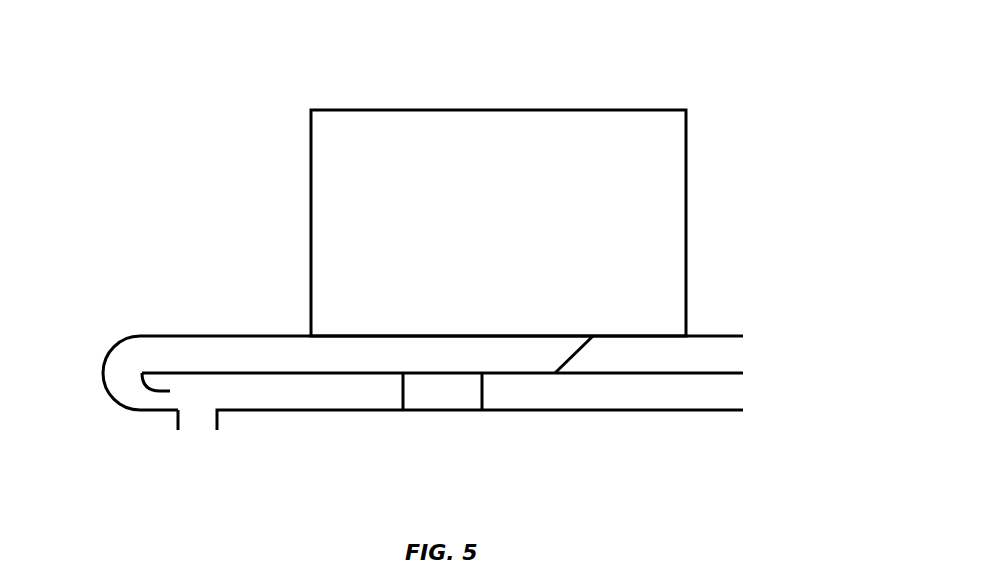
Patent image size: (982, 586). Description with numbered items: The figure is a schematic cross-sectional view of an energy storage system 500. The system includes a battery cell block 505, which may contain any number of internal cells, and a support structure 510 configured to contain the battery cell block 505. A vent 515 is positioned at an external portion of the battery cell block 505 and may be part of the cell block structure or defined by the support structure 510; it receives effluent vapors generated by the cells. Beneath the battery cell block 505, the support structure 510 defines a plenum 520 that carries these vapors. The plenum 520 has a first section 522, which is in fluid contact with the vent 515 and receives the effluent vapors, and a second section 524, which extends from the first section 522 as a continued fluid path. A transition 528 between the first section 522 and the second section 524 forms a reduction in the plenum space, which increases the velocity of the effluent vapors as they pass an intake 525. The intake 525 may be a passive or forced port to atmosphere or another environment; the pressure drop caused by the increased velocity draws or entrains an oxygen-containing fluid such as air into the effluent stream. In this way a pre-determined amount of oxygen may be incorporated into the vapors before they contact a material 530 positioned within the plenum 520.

The energy storage system 500 is at (181, 91).
The battery cell block 505 is at (592, 110).
The support structure 510 is at (670, 411).
The vent 515 is at (555, 375).
The plenum 520 is at (127, 363).
The first section 522 is at (178, 335).
The second section 524 is at (252, 411).
The intake 525 is at (178, 430).
The transition 528 is at (140, 383).
The material 530 is at (445, 411).